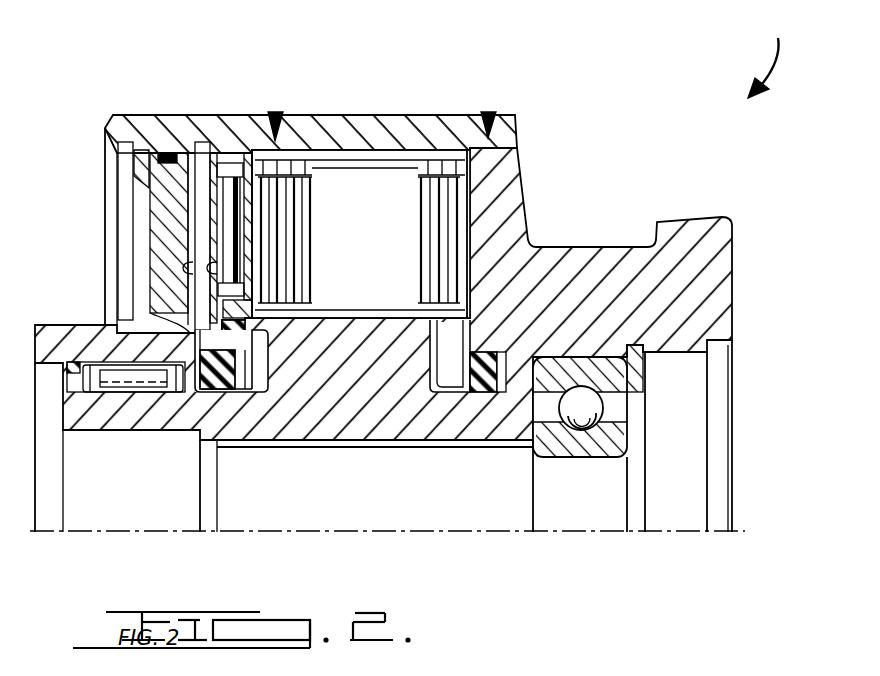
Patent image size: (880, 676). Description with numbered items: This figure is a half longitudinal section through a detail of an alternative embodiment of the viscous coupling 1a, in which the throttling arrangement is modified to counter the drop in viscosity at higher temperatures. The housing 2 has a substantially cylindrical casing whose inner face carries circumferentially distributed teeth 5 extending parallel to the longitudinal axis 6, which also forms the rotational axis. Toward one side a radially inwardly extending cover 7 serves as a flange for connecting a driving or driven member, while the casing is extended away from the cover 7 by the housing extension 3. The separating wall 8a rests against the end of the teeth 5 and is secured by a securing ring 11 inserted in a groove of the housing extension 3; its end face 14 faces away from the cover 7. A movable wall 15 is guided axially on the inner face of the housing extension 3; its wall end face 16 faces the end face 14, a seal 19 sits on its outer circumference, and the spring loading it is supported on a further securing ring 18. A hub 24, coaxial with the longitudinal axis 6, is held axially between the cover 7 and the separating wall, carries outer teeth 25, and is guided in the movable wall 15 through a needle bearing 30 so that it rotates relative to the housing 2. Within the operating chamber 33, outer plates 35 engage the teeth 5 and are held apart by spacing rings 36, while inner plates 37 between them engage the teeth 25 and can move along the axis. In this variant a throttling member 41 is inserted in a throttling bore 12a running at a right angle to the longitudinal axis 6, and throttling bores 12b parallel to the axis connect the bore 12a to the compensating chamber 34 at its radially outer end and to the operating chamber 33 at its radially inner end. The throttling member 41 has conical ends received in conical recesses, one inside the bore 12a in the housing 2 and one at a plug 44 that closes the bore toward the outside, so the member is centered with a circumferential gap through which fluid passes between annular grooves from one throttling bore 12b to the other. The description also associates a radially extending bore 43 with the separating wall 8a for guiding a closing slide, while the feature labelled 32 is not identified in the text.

The electromagnetic clutch assembly 1a is at (772, 55).
The housing 2 is at (425, 132).
The housing extension 3 is at (110, 115).
The teeth 5 is at (335, 157).
The longitudinal axis 6 is at (572, 533).
The cover 7 is at (718, 270).
The separating wall 8a is at (210, 212).
The securing ring 11 is at (204, 152).
The throttling bore 12a is at (229, 163).
The throttling bores 12b is at (268, 283).
The end face 14 is at (248, 273).
The movable wall 15 is at (163, 292).
The wall end face 16 is at (188, 272).
The securing ring 18 is at (120, 163).
The seal 19 is at (165, 152).
The hub 24 is at (227, 405).
The outer teeth 25 is at (376, 312).
The needle bearing 30 is at (130, 392).
The bore 32 is at (243, 443).
The operating chamber 33 is at (380, 190).
The compensating chamber 34 is at (202, 255).
The outer plates 35 is at (468, 114).
The spacing rings 36 is at (462, 187).
The inner plates 37 is at (450, 240).
The throttling member 41 is at (198, 200).
The radially extending bore 43 is at (250, 242).
The plug 44 is at (275, 112).